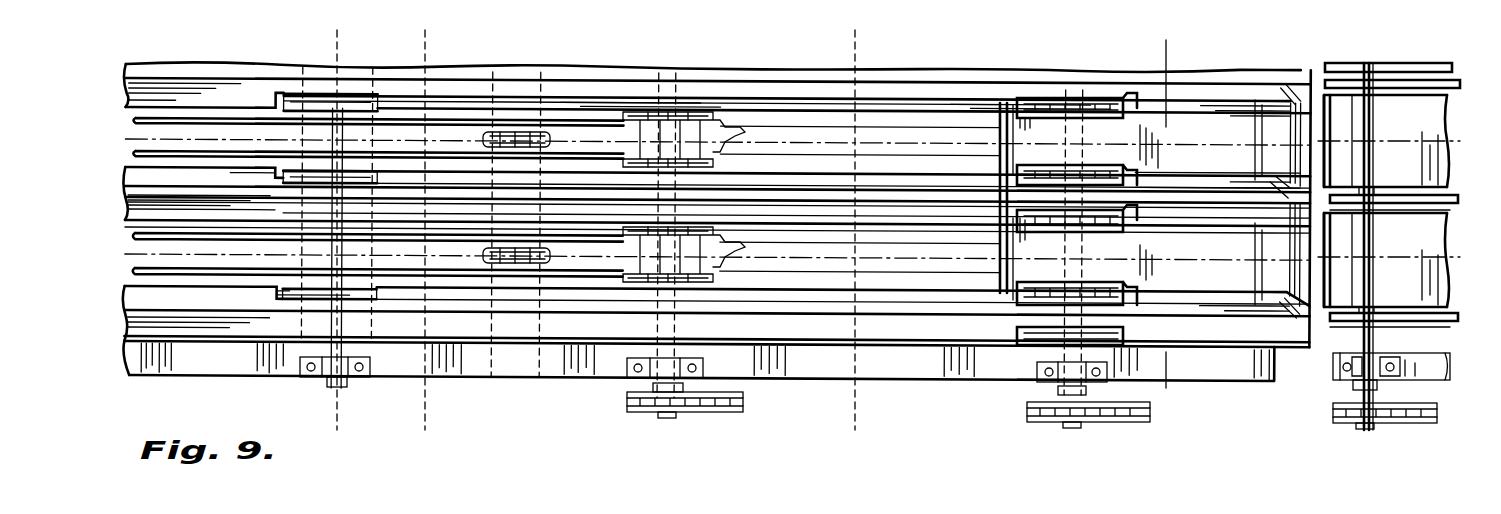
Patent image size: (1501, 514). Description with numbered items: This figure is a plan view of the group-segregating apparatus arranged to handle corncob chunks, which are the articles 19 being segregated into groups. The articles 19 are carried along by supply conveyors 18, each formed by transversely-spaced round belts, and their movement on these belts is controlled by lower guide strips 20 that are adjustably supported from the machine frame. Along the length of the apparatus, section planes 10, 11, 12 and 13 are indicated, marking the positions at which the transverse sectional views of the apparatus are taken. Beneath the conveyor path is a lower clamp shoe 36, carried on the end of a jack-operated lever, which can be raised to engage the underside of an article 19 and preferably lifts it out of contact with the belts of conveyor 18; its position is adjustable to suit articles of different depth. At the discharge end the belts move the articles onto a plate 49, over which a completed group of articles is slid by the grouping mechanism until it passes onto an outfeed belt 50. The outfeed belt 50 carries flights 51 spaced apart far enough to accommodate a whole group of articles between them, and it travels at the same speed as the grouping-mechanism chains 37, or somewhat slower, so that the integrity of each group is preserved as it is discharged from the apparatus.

The section line 10- 10 is at (300, 412).
The section line 11- 11 is at (395, 405).
The section line 12- 12 is at (822, 393).
The section line 13- 13 is at (1137, 367).
The supply conveyor 18 is at (740, 247).
The lower clamp shoe 36 is at (533, 133).
The guide strip 20 is at (1202, 182).
The plate 49 is at (1260, 150).
The outfeed belt 50 is at (1347, 108).
The flight 51 is at (1368, 127).
The chain 37 is at (296, 4).
The article 19 is at (997, 4).